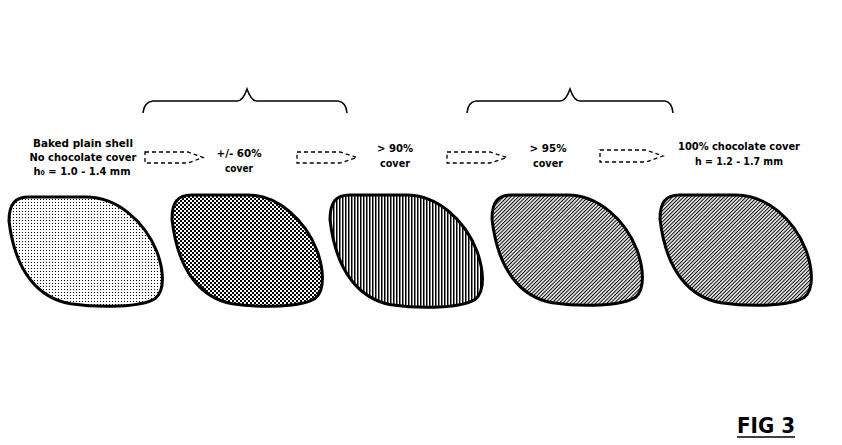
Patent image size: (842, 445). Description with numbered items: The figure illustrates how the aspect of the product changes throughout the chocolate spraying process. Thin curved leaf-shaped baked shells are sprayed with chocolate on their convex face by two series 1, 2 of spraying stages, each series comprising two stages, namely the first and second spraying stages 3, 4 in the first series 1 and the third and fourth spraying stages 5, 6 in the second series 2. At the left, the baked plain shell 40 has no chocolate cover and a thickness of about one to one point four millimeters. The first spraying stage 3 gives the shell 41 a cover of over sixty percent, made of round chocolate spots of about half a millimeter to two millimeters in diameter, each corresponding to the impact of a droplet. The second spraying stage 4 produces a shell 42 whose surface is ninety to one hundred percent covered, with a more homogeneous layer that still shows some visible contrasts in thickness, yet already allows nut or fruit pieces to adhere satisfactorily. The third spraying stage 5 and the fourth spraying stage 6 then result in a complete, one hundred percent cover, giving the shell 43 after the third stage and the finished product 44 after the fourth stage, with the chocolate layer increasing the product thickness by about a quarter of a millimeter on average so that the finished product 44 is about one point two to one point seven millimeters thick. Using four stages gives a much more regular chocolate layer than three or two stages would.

The first series of spraying stages 1 is at (264, 88).
The second series of spraying stages 2 is at (584, 88).
The first spraying stage 3 is at (183, 152).
The second spraying stage 4 is at (315, 152).
The third spraying stage 5 is at (473, 152).
The fourth spraying stage 6 is at (628, 150).
The shell 40 is at (77, 293).
The shell after first spraying stage 41 is at (238, 304).
The shell after second spraying stage 42 is at (388, 304).
The shell after third spraying stage 43 is at (557, 303).
The finished product 44 is at (727, 303).